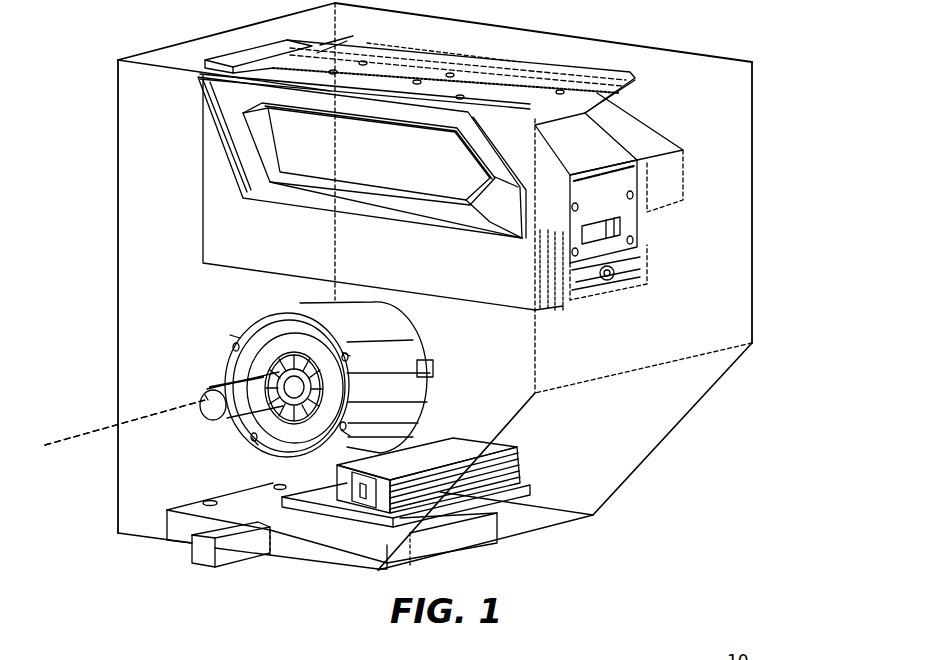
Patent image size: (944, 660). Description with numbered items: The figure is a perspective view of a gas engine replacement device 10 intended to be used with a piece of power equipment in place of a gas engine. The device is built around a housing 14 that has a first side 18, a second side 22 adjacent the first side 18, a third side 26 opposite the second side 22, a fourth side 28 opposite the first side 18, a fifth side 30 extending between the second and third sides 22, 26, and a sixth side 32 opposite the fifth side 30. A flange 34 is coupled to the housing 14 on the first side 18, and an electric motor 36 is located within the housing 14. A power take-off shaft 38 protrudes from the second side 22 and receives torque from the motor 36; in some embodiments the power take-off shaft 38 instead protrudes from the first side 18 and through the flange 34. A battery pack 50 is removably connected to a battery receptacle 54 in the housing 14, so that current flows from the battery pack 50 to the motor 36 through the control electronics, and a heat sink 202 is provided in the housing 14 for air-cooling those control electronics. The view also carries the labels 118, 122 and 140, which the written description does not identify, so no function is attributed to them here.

The gas engine replacement device 10 is at (744, 28).
The housing 14 is at (694, 378).
The first side 18 is at (540, 530).
The second side 22 is at (160, 255).
The third side 26 is at (754, 163).
The fourth side 28 is at (557, 52).
The fifth side 30 is at (117, 127).
The sixth side 32 is at (725, 253).
The flange 34 is at (357, 547).
The electric motor 36 is at (273, 353).
The power take-off shaft 38 is at (233, 407).
The battery pack 50 is at (225, 113).
The battery receptacle 54 is at (502, 288).
The rotation axis 118 is at (100, 432).
The drive axis 122 is at (125, 422).
The shaft end 140 is at (213, 402).
The heat sink 202 is at (505, 462).